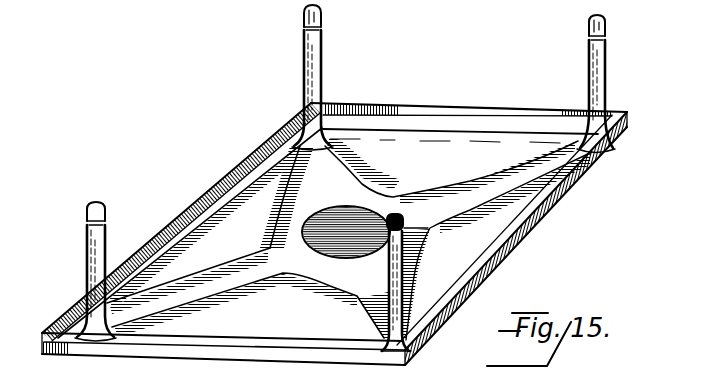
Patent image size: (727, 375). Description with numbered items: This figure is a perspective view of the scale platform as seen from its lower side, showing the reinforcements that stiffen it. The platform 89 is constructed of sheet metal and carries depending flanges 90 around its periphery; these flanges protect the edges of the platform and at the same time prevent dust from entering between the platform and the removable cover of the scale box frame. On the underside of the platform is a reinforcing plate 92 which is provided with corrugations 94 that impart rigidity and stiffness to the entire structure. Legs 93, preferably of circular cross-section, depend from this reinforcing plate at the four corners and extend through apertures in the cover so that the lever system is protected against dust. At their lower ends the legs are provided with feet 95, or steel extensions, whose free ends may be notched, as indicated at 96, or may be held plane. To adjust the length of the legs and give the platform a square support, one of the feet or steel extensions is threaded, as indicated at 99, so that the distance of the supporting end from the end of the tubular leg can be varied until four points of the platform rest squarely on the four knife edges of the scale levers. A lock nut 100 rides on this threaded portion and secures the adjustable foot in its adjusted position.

The platform 89 is at (481, 275).
The depending flanges 90 is at (515, 250).
The reinforcing plate 92 is at (430, 145).
The legs 93 is at (90, 246).
The corrugations 94 is at (463, 185).
The feet 95 is at (608, 27).
The notch 96 is at (304, 14).
The threaded portion 99 is at (448, 224).
The lock nut 100 is at (386, 250).